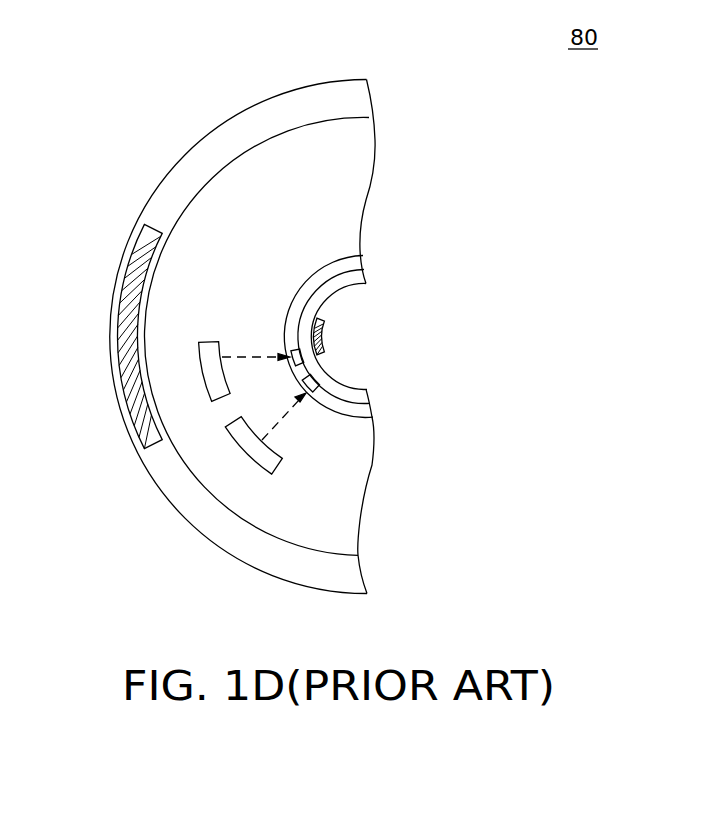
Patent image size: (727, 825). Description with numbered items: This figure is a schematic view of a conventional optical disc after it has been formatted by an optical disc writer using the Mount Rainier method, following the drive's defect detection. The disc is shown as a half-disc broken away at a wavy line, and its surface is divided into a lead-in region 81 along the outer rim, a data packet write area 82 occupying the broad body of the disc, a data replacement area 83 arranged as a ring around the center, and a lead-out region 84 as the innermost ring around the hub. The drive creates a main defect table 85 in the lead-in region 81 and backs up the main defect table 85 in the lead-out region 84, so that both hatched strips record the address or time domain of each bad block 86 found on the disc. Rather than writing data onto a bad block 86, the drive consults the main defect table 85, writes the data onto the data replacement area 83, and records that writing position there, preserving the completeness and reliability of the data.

The lead-in region 81 is at (340, 102).
The data packet write area 82 is at (340, 186).
The data replacement area 83 is at (342, 273).
The lead-out region 84 is at (348, 292).
The main defect table 85 is at (130, 277).
The bad block 86 is at (232, 368).